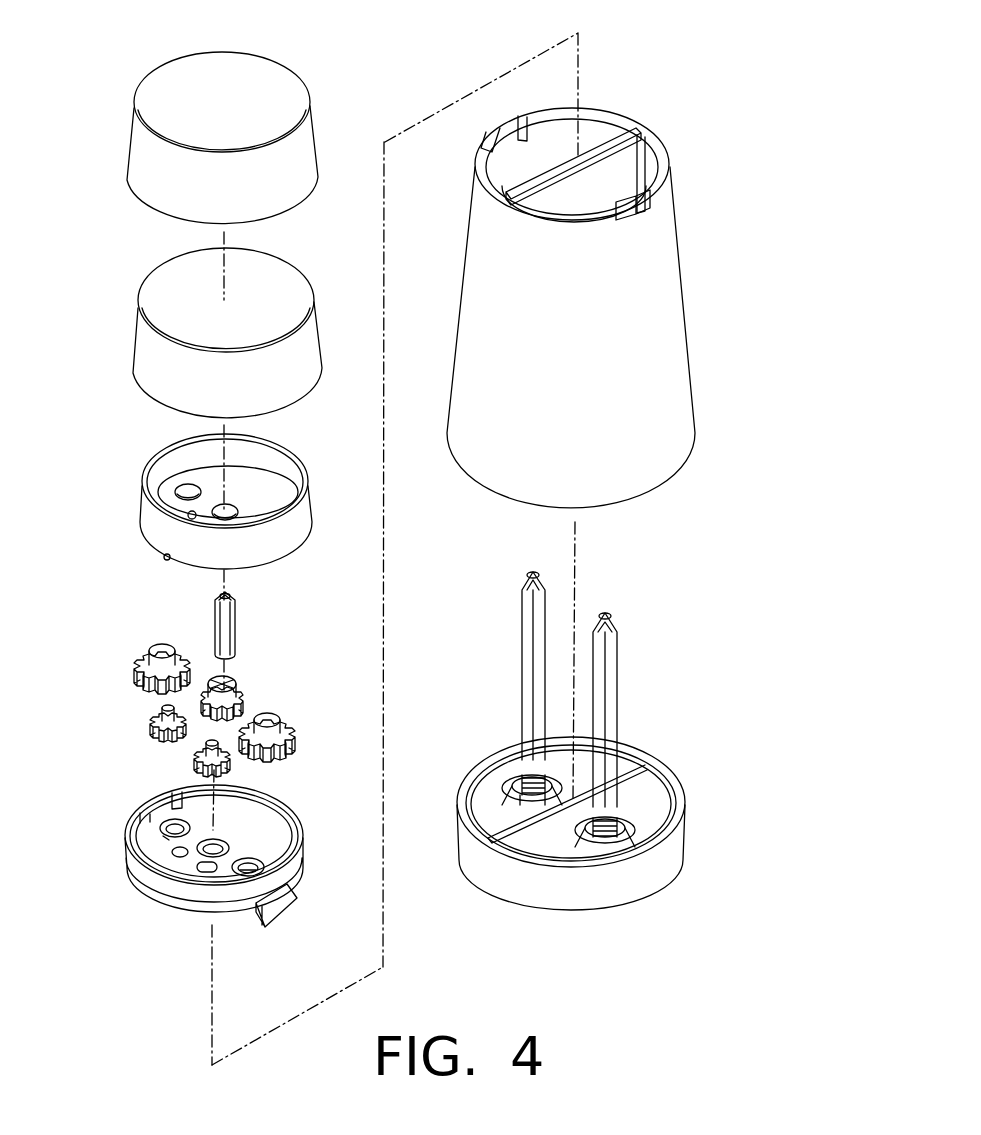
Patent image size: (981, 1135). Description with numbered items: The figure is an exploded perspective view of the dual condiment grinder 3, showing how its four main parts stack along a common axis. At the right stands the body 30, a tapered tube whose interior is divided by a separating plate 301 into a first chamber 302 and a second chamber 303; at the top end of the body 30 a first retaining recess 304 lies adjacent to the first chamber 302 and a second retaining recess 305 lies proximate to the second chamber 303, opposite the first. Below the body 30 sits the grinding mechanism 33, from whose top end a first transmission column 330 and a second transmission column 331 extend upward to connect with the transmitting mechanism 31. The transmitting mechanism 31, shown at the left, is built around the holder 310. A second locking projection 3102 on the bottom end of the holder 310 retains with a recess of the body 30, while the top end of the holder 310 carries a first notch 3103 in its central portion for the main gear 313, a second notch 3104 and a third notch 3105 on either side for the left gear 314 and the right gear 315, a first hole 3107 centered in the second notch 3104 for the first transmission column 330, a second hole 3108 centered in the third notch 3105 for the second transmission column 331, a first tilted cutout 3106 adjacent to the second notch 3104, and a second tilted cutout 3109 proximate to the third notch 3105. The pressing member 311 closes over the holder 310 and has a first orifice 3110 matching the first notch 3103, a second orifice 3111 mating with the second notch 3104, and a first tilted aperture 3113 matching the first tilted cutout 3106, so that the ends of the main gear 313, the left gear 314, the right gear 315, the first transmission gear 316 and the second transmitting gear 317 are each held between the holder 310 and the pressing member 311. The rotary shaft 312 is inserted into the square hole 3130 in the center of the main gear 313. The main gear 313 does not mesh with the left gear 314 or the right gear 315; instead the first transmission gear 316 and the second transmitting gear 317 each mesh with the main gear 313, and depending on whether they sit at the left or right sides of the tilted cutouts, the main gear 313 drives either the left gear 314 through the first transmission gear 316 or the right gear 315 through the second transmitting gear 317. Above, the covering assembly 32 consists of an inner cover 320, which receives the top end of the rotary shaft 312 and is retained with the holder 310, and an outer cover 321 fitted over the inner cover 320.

The dual condiment grinder 3 is at (455, 68).
The body 30 is at (570, 283).
The separating plate 301 is at (612, 142).
The first chamber 302 is at (505, 177).
The second chamber 303 is at (647, 177).
The first retaining recess 304 is at (505, 133).
The second retaining recess 305 is at (637, 207).
The transmitting mechanism 31 is at (102, 508).
The holder 310 is at (213, 904).
The second locking projection 3102 is at (292, 892).
The first notch 3103 is at (217, 857).
The second notch 3104 is at (162, 830).
The third notch 3105 is at (253, 860).
The first tilted cutout 3106 is at (178, 858).
The first hole 3107 is at (172, 834).
The second hole 3108 is at (245, 873).
The second tilted cutout 3109 is at (205, 872).
The pressing member 311 is at (220, 501).
The first orifice 3110 is at (237, 512).
The second orifice 3111 is at (180, 482).
The first tilted aperture 3113 is at (183, 520).
The rotary shaft 312 is at (233, 622).
The main gear 313 is at (264, 684).
The square hole 3130 is at (235, 675).
The left gear 314 is at (160, 648).
The right gear 315 is at (293, 735).
The first transmission gear 316 is at (155, 728).
The second transmitting gear 317 is at (227, 760).
The covering assembly 32 is at (102, 320).
The inner cover 320 is at (292, 280).
The outer cover 321 is at (267, 73).
The grinding mechanism 33 is at (580, 741).
The first transmission column 330 is at (528, 682).
The second transmission column 331 is at (613, 673).